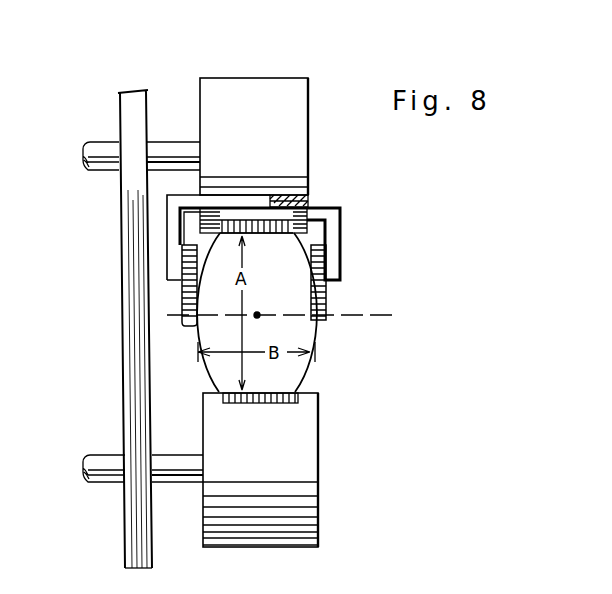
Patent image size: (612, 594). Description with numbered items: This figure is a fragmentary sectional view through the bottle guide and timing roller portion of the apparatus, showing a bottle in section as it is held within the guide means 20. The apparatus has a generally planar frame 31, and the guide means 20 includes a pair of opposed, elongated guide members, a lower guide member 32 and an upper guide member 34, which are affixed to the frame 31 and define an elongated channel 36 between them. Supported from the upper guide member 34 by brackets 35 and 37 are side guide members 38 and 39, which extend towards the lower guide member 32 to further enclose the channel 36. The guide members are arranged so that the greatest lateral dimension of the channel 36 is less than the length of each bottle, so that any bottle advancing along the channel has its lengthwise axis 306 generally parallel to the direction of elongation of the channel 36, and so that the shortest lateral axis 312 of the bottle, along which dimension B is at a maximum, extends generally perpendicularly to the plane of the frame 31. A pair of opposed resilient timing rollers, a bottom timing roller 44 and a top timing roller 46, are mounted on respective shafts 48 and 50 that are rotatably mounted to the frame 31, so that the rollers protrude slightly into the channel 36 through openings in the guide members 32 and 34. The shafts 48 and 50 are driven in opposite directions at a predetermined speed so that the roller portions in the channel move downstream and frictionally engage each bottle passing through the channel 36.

The guide means 20 is at (414, 298).
The frame 31 is at (128, 202).
The lower guide member 32 is at (289, 415).
The upper guide member 34 is at (292, 207).
The bracket 35 is at (335, 248).
The channel 36 is at (318, 379).
The bracket 37 is at (175, 267).
The side guide member 38 is at (330, 293).
The side guide member 39 is at (183, 297).
The bottom timing roller 44 is at (318, 533).
The top timing roller 46 is at (302, 77).
The shaft 48 is at (184, 482).
The shaft 50 is at (172, 142).
The lengthwise axis 306 is at (257, 315).
The lateral axis 312 is at (370, 313).